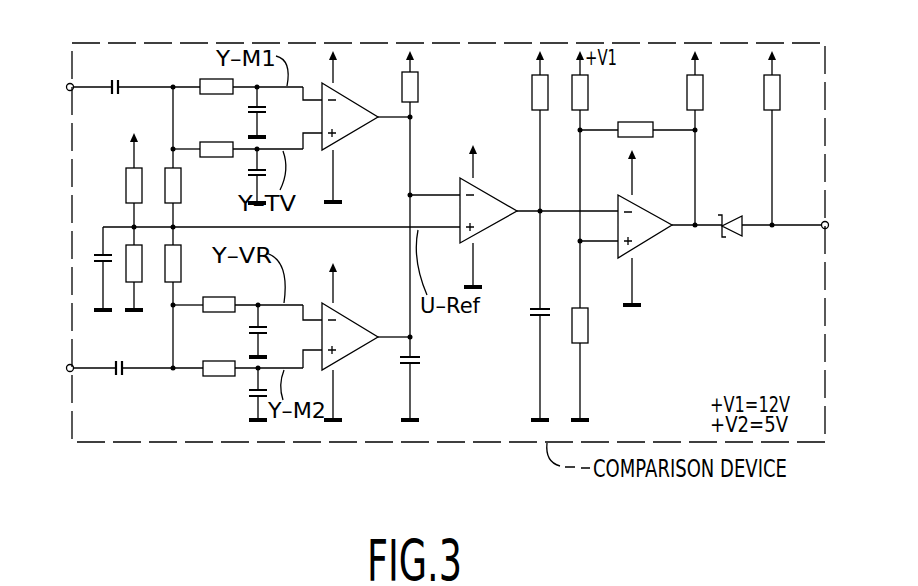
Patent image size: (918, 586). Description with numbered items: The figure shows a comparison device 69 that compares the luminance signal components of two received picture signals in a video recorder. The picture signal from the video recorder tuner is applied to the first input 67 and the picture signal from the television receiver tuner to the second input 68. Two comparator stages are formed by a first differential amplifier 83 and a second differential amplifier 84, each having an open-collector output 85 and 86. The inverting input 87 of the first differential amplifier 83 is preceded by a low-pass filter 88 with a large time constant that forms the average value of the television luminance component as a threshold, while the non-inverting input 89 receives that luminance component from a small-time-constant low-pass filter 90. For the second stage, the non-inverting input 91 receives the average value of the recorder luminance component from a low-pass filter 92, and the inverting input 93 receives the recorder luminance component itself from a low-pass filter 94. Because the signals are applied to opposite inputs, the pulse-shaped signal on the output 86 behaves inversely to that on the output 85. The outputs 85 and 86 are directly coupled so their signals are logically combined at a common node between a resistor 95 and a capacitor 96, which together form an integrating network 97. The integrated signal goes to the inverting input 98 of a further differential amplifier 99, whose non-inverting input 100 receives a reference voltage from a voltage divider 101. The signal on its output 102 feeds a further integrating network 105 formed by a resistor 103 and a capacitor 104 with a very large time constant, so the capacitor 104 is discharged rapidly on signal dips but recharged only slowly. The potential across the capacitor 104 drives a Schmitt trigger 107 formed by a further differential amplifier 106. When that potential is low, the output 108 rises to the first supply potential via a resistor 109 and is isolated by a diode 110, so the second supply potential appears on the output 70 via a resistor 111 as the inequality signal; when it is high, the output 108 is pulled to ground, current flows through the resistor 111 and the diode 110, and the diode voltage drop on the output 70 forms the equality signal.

The first input 67 is at (66, 368).
The second input 68 is at (66, 87).
The comparison device 69 is at (496, 445).
The output 70 is at (828, 223).
The first differential amplifier 83 is at (348, 108).
The second differential amplifier 84 is at (352, 330).
The output of the first differential amplifier 85 is at (378, 119).
The output of the second differential amplifier 86 is at (378, 340).
The inverting input of the first differential amplifier 87 is at (303, 99).
The low-pass filter 88 is at (233, 104).
The non-inverting input of the first differential amplifier 89 is at (303, 136).
The second RC filter 90 is at (234, 169).
The non-inverting input of the second differential amplifier 91 is at (304, 354).
The low-pass filter 92 is at (234, 391).
The inverting input of the second differential amplifier 93 is at (320, 318).
The low-pass filter 94 is at (234, 322).
The resistor 95 is at (418, 88).
The capacitor 96 is at (421, 360).
The integrating network 97 is at (422, 373).
The inverting input of the further differential amplifier 98 is at (458, 190).
The further differential amplifier 99 is at (490, 205).
The non-inverting input of the further differential amplifier 100 is at (460, 235).
The voltage divider 101 is at (122, 165).
The output of the further differential amplifier 102 is at (518, 213).
The resistor 103 is at (532, 102).
The capacitor 104 is at (533, 311).
The further integrating network 105 is at (533, 320).
The further differential amplifier 106 is at (650, 232).
The Schmitt trigger 107 is at (622, 112).
The output of the differential amplifier 106 108 is at (668, 222).
The resistor 109 is at (697, 90).
The diode 110 is at (729, 229).
The resistor 111 is at (779, 93).